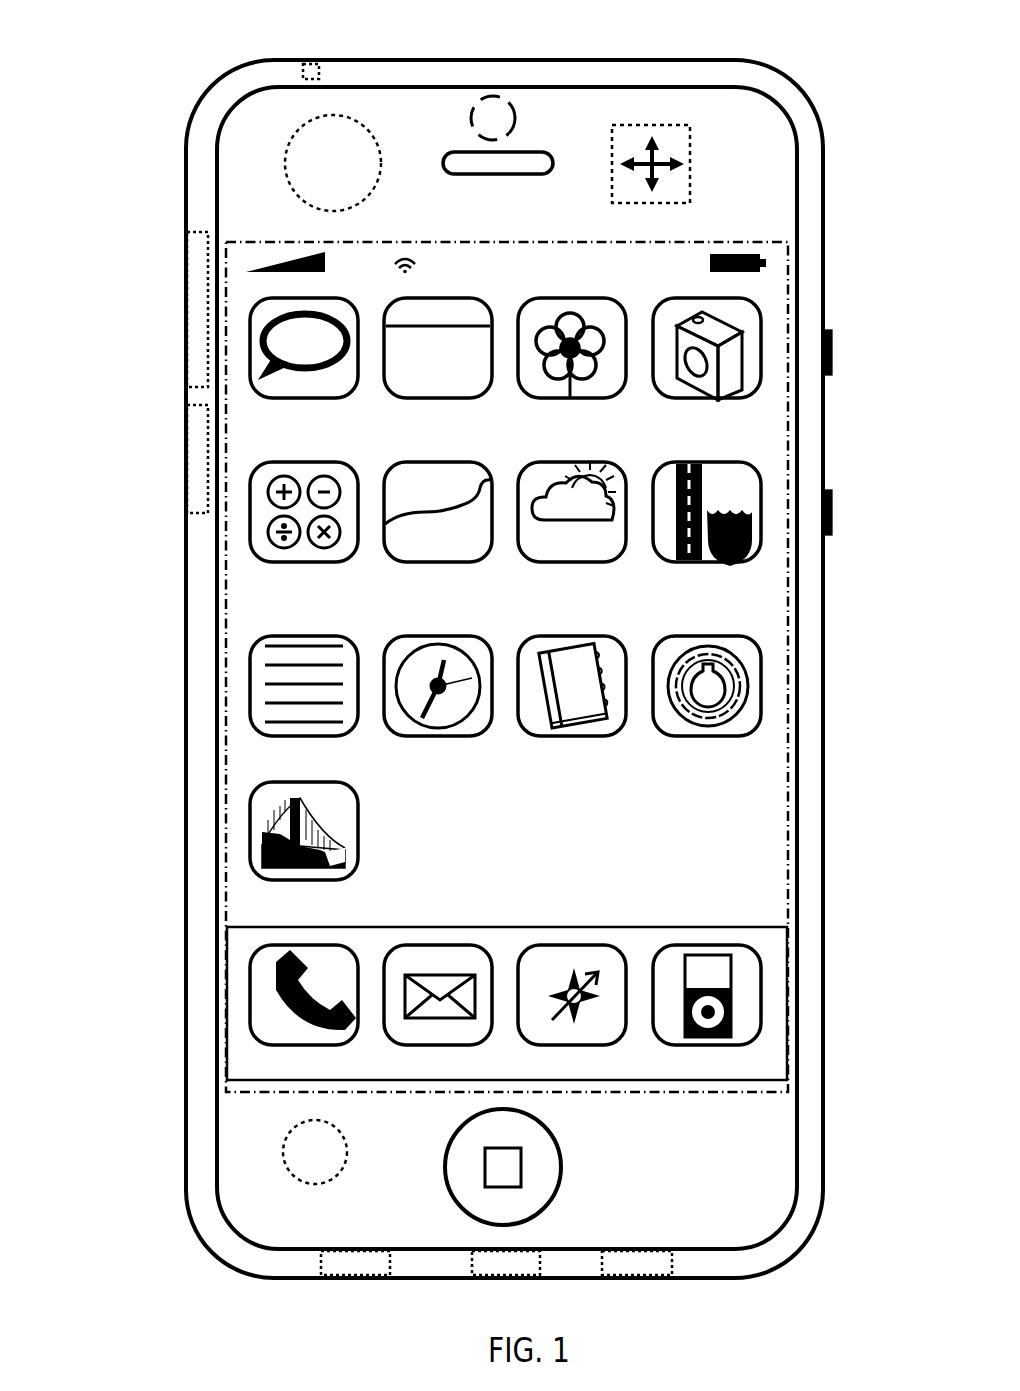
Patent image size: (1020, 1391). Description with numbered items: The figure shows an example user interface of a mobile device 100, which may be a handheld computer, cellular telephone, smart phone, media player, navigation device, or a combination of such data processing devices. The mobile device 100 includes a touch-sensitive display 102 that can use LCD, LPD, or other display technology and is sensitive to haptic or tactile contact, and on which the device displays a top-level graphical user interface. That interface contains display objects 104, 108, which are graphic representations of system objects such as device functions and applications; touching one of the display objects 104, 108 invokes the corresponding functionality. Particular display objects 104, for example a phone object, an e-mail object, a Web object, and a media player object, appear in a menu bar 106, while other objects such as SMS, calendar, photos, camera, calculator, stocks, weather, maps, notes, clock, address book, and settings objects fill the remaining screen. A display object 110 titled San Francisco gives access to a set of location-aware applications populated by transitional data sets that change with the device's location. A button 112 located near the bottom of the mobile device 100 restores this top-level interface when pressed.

The mobile device 100 is at (582, 60).
The touch-sensitive display 102 is at (720, 240).
The display objects 104 is at (774, 293).
The menu bar 106 is at (227, 1042).
The display objects 108 is at (776, 940).
The display object 110 is at (250, 830).
The button 112 is at (563, 1160).